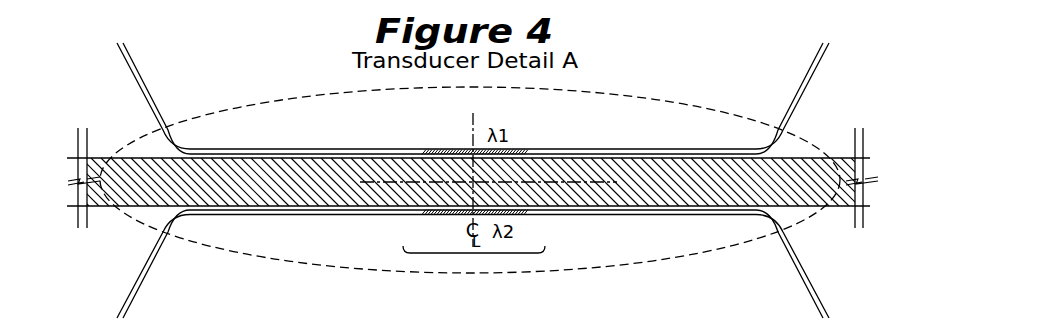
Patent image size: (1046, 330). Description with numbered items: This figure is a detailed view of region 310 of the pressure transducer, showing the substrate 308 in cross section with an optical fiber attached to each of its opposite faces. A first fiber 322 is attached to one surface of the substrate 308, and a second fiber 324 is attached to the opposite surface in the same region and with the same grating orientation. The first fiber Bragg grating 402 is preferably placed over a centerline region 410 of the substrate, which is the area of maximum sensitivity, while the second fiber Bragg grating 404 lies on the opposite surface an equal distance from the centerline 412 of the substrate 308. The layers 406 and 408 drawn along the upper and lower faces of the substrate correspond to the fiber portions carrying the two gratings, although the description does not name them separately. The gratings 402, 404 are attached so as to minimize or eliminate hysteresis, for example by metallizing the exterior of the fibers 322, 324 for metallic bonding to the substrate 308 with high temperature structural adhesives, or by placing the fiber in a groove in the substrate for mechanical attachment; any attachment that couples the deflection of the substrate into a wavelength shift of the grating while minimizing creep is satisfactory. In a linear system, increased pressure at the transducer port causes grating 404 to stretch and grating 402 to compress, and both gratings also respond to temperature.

The substrate 308 is at (155, 157).
The region 310 is at (608, 88).
The first fiber 322 is at (800, 92).
The second fiber 324 is at (792, 257).
The first fiber Bragg grating 402 is at (453, 149).
The second fiber Bragg grating 404 is at (453, 214).
The upper cladding layer 406 is at (332, 149).
The lower cladding layer 408 is at (328, 217).
The centerline region 410 is at (474, 262).
The centerline 412 is at (567, 185).